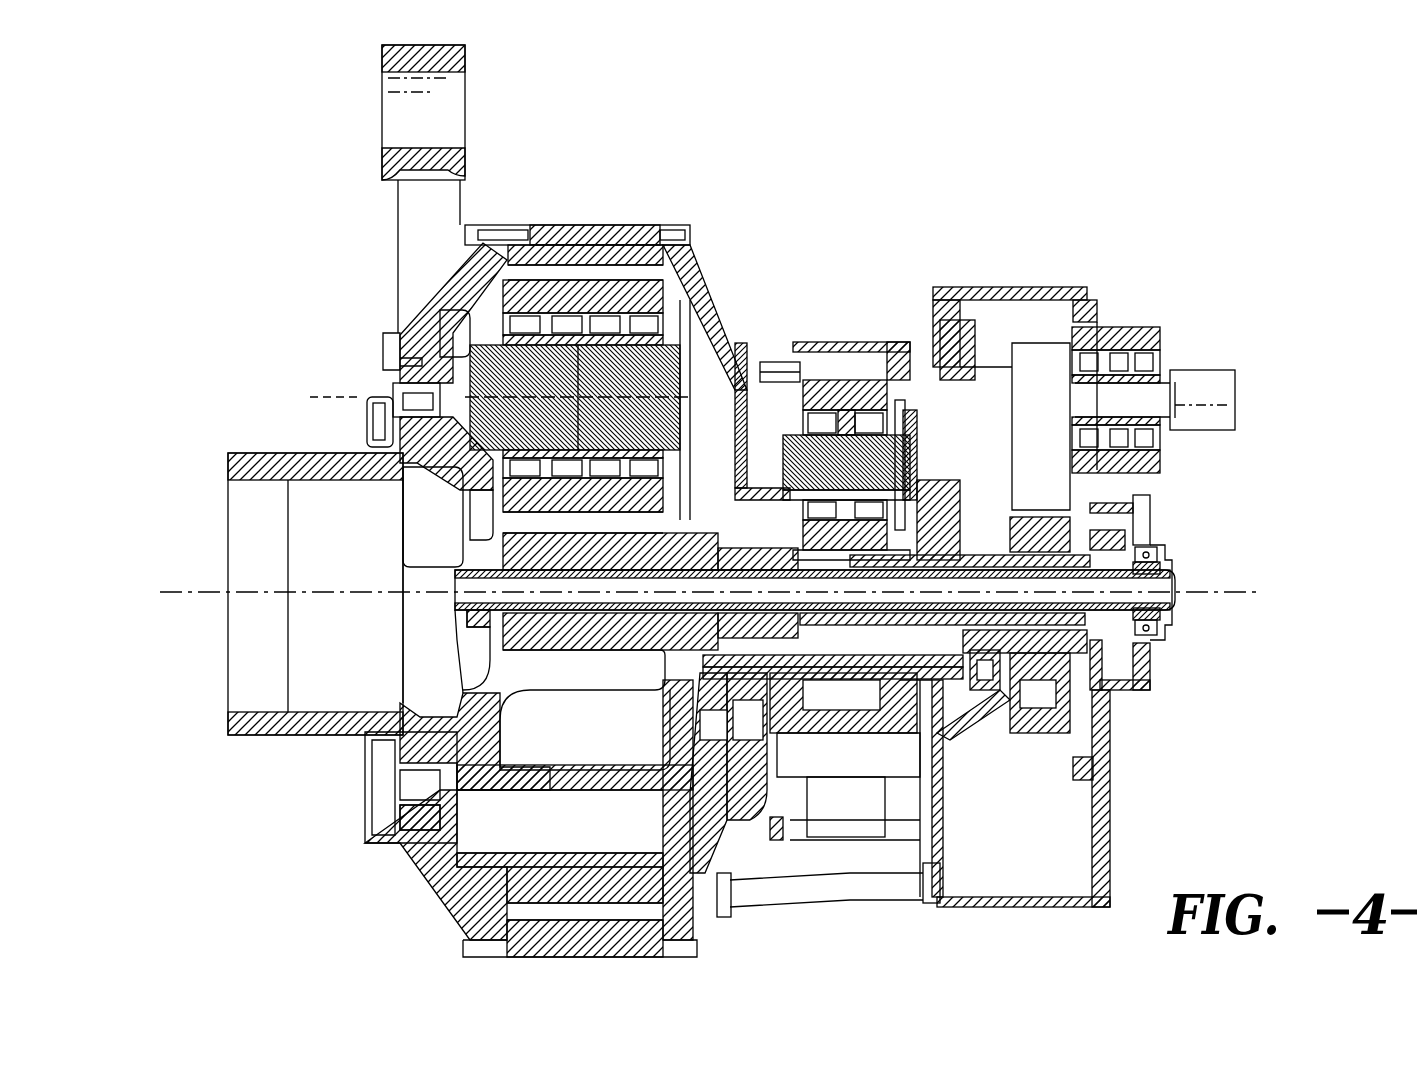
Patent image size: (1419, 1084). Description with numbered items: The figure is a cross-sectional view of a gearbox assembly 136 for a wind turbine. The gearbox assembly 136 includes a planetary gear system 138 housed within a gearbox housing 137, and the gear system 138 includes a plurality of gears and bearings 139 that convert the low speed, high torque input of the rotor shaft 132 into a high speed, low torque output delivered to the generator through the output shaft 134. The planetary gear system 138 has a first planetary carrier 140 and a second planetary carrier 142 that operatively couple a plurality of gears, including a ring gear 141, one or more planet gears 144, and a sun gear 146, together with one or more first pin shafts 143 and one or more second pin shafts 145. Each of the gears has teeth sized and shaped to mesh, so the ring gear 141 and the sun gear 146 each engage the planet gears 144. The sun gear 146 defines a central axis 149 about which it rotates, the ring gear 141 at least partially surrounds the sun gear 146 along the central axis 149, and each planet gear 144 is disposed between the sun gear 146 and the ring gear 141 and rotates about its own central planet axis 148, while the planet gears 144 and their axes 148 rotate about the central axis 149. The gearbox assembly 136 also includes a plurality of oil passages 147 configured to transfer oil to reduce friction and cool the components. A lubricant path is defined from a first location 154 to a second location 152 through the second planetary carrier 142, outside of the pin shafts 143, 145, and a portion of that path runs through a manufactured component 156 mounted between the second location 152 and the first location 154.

The rotor shaft 132 is at (228, 537).
The output shaft 134 is at (1205, 370).
The gearbox assembly 136 is at (1203, 247).
The gearbox housing 137 is at (1015, 287).
The planetary gear system 138 is at (470, 265).
The bearings 139 is at (713, 345).
The first planetary carrier 140 is at (300, 452).
The ring gear 141 is at (607, 270).
The second planetary carrier 142 is at (786, 400).
The first pin shafts 143 is at (458, 330).
The planet gears 144 is at (570, 295).
The second pin shafts 145 is at (925, 400).
The sun gear 146 is at (575, 630).
The oil passages 147 is at (668, 265).
The central planet axis 148 is at (325, 395).
The central axis 149 is at (188, 600).
The second location 152 is at (727, 827).
The first location 154 is at (977, 690).
The manufactured component 156 is at (887, 690).